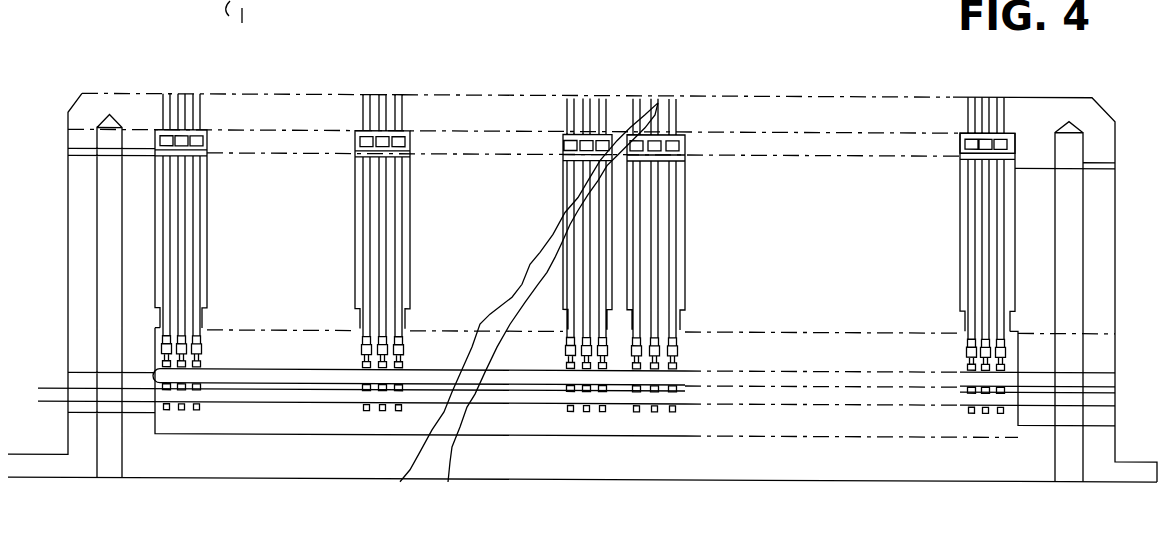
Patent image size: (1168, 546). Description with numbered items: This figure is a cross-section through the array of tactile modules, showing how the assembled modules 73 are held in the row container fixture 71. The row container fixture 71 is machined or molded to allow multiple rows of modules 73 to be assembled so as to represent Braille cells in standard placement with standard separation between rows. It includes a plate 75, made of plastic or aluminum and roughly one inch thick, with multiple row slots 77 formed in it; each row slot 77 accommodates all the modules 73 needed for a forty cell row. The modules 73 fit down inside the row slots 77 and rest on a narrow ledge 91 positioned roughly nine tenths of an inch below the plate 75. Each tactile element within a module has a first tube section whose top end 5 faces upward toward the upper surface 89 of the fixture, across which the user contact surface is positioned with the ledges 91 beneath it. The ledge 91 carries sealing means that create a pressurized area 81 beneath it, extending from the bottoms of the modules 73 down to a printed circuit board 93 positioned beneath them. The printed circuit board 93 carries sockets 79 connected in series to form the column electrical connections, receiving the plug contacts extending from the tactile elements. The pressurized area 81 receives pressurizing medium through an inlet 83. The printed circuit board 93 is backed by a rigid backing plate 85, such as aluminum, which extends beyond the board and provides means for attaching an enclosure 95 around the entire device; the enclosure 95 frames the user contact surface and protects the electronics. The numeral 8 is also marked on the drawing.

The row container fixture 71 is at (88, 305).
The modules 73 is at (178, 86).
The plate 75 is at (375, 93).
The row slots 77 is at (405, 96).
The sockets 79 is at (197, 392).
The pressurized area 81 is at (552, 357).
The top end 5 is at (623, 362).
The inlet 83 is at (1118, 338).
The cross bar 8 is at (1105, 378).
The backing plate 85 is at (960, 473).
The upper surface 89 is at (983, 86).
The ledge 91 is at (950, 145).
The printed circuit board 93 is at (358, 398).
The enclosure 95 is at (1085, 258).